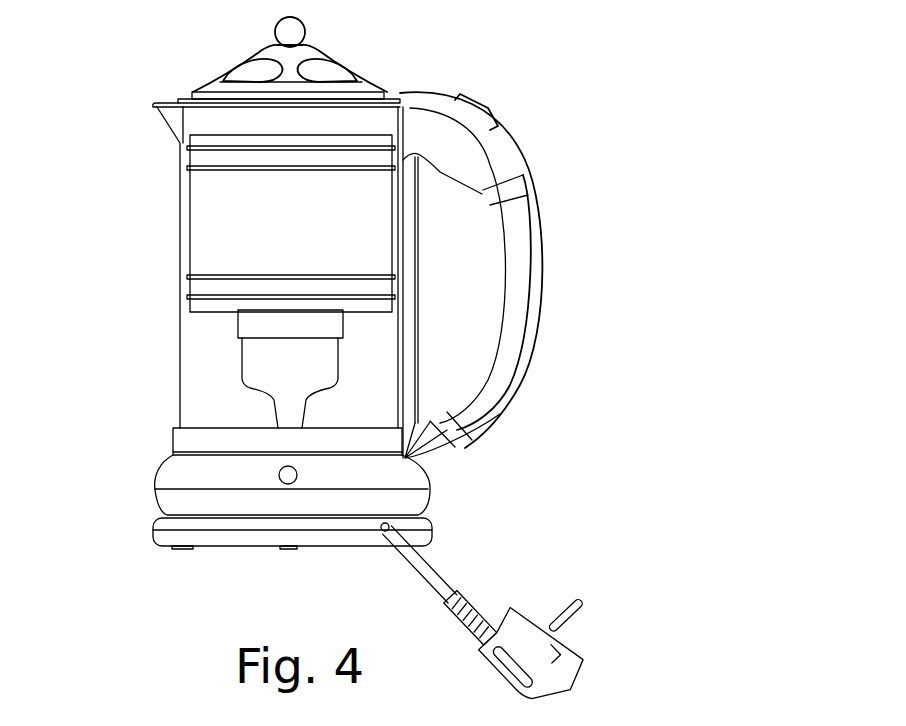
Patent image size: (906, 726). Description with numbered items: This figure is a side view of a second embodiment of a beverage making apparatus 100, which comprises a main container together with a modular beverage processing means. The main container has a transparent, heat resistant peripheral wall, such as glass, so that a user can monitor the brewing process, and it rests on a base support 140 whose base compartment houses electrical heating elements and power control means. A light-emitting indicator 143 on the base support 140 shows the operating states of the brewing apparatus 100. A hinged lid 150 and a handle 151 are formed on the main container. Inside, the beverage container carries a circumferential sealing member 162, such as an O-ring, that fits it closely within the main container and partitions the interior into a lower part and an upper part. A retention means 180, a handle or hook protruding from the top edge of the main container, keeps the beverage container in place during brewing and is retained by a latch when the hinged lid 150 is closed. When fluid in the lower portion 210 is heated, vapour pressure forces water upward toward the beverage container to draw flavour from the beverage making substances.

The beverage making apparatus 100 is at (508, 74).
The hinged lid 150 is at (323, 43).
The retention means 180 is at (410, 97).
The circumferential sealing member 162 is at (238, 170).
The lower portion 210 is at (273, 369).
The light-emitting indicator 143 is at (298, 475).
The base support 140 is at (152, 505).
The handle 151 is at (532, 284).